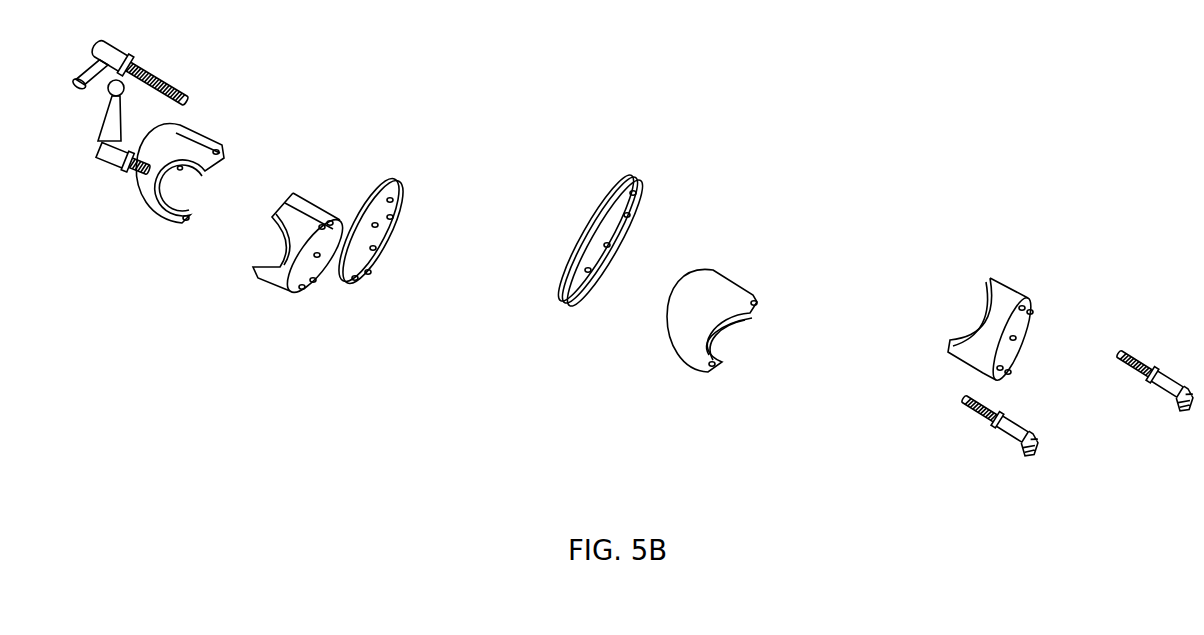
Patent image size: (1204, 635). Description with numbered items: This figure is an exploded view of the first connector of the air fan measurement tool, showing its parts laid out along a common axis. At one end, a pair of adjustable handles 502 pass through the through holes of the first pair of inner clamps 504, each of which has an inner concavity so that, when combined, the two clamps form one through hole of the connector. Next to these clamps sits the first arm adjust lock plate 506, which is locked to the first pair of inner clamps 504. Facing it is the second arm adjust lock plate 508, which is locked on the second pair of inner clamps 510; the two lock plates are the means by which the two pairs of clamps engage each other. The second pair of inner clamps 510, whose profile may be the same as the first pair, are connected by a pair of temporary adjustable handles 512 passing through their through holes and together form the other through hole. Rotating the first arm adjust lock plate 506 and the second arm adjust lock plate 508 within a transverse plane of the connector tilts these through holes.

The adjustable handles 502 is at (130, 137).
The first pair of inner clamps 504 is at (137, 230).
The first arm adjust lock plate 506 is at (400, 227).
The second arm adjust lock plate 508 is at (550, 297).
The second pair of inner clamps 510 is at (707, 264).
The temporary adjustable handles 512 is at (1160, 390).